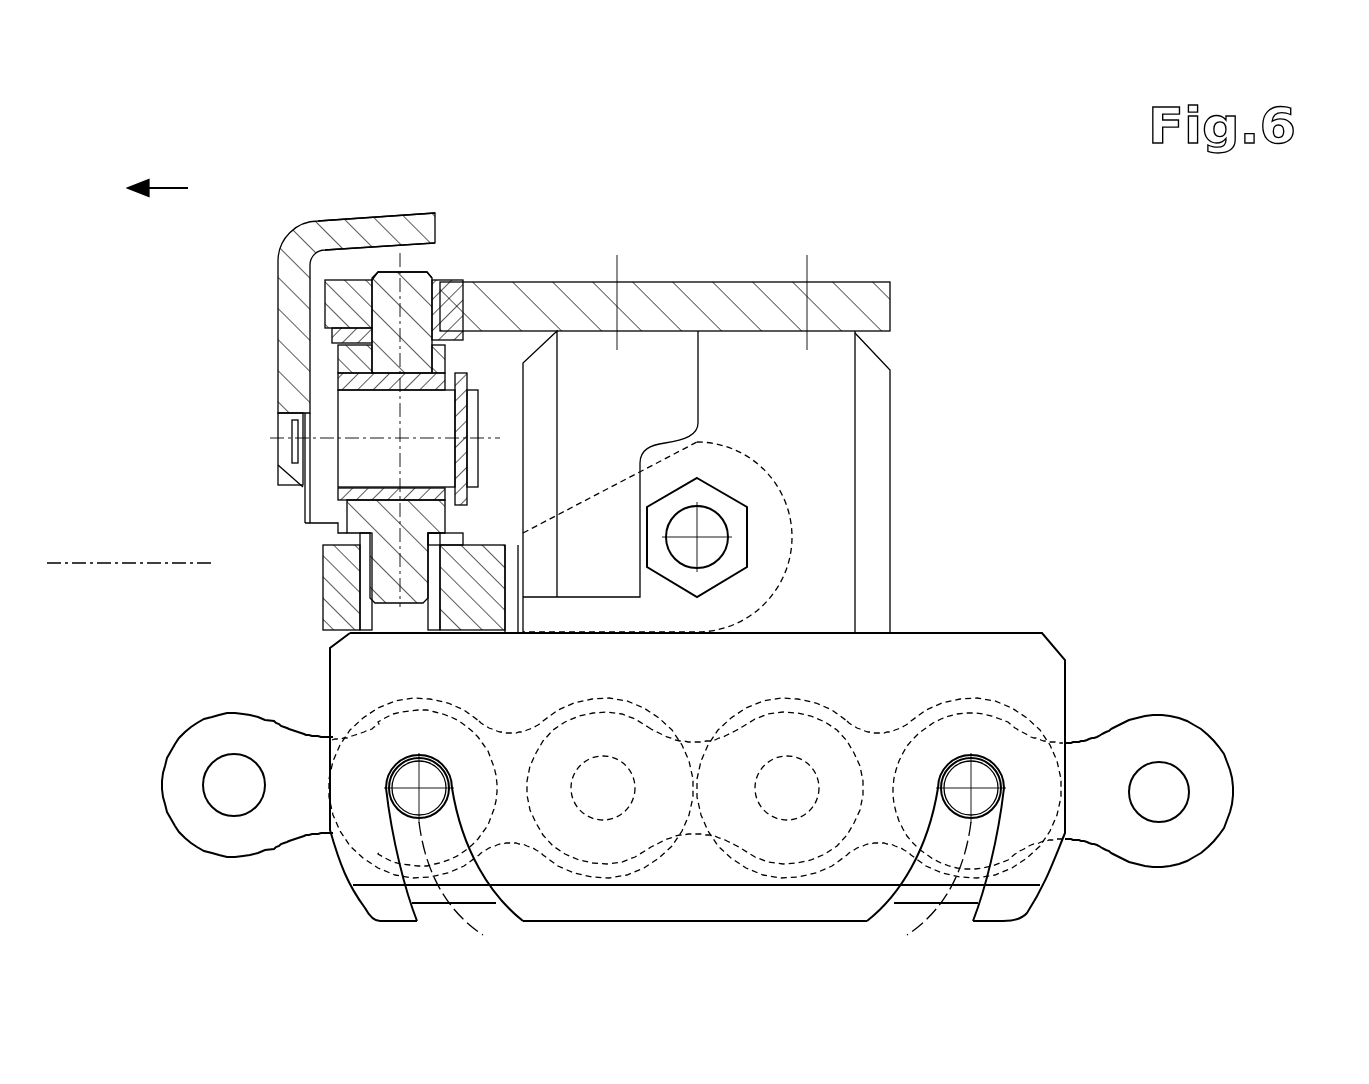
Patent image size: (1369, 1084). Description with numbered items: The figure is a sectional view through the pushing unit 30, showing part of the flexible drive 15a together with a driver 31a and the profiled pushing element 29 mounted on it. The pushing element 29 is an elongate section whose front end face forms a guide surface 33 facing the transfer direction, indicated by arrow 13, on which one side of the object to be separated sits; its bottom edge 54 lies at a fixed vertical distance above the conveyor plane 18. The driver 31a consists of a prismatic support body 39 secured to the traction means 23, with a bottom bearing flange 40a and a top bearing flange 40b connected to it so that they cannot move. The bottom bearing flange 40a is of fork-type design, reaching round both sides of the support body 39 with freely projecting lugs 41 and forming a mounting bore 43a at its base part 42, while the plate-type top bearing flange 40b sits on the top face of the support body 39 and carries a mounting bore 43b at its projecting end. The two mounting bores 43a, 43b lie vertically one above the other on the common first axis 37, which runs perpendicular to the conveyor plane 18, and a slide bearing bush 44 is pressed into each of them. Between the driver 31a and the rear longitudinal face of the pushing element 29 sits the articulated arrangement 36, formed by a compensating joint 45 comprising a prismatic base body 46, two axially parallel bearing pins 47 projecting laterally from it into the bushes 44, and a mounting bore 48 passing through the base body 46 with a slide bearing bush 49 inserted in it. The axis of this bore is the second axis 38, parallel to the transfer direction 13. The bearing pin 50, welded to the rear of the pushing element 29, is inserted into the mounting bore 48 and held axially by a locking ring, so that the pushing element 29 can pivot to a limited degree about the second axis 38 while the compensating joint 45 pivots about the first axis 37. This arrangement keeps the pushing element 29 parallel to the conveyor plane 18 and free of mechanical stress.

The transfer direction arrow 13 is at (168, 187).
The flexible drive 15a is at (1258, 741).
The conveyor plane 18 is at (91, 560).
The traction means 23 is at (1165, 716).
The pushing element 29 is at (380, 223).
The pushing unit 30 is at (692, 178).
The driver 31a is at (890, 402).
The guide surface 33 is at (280, 330).
The articulated arrangement 36 is at (450, 260).
The first axis 37 is at (396, 259).
The second axis 38 is at (268, 437).
The prismatic support body 39 is at (877, 488).
The bottom bearing flange 40a is at (323, 567).
The top bearing flange 40b is at (732, 282).
The lug 41 is at (773, 557).
The base part 42 is at (340, 630).
The mounting bore 43a is at (385, 632).
The mounting bore 43b is at (447, 313).
The slide bearing bush 44 is at (348, 297).
The compensating joint 45 is at (463, 367).
The prismatic base body 46 is at (372, 358).
The bearing pin 47 is at (415, 273).
The mounting bore 48 is at (337, 530).
The slide bearing bush 49 is at (337, 503).
The bearing pin 50 is at (428, 466).
The bottom edge 54 is at (288, 490).